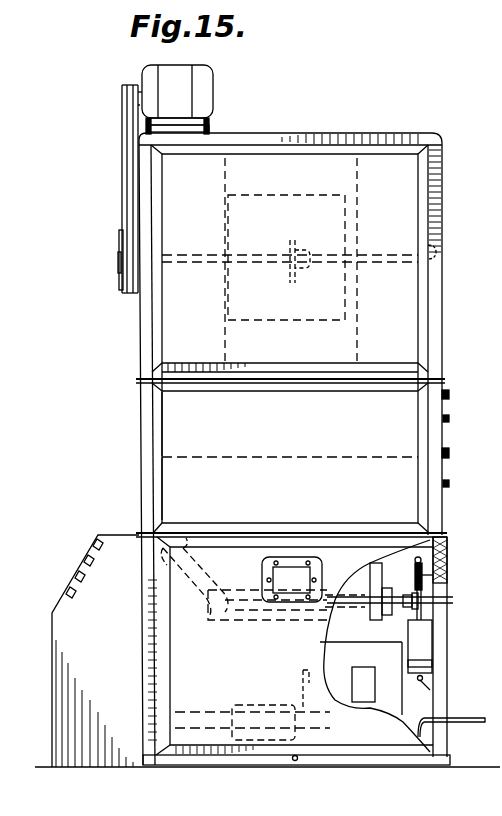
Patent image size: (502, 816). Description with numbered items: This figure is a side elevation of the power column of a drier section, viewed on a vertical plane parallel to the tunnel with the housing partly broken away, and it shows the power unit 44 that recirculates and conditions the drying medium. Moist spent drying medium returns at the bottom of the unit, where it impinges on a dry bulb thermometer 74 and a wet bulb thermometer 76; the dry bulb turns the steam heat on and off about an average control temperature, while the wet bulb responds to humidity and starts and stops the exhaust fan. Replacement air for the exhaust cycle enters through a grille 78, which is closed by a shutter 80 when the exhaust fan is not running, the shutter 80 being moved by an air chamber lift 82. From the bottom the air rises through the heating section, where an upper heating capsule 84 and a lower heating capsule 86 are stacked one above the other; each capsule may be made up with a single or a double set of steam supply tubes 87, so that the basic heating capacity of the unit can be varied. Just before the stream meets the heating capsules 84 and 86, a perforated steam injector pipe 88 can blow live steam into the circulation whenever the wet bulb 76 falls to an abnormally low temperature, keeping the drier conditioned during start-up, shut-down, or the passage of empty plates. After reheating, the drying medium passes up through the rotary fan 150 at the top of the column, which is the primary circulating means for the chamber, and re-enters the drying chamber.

The power unit 44 is at (283, 131).
The rotary fan 150 is at (226, 235).
The upper heating capsule 84 is at (175, 417).
The lower heating capsule 86 is at (177, 477).
The steam supply tubes 87 is at (450, 418).
The shutter 80 is at (440, 553).
The grille 78 is at (438, 573).
The perforated steam injector pipe 88 is at (433, 592).
The air chamber lift 82 is at (420, 648).
The wet bulb thermometer 76 is at (327, 673).
The dry bulb thermometer 74 is at (360, 687).